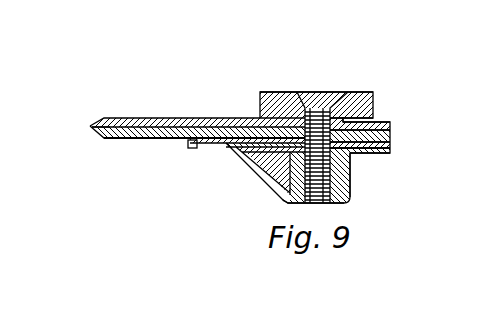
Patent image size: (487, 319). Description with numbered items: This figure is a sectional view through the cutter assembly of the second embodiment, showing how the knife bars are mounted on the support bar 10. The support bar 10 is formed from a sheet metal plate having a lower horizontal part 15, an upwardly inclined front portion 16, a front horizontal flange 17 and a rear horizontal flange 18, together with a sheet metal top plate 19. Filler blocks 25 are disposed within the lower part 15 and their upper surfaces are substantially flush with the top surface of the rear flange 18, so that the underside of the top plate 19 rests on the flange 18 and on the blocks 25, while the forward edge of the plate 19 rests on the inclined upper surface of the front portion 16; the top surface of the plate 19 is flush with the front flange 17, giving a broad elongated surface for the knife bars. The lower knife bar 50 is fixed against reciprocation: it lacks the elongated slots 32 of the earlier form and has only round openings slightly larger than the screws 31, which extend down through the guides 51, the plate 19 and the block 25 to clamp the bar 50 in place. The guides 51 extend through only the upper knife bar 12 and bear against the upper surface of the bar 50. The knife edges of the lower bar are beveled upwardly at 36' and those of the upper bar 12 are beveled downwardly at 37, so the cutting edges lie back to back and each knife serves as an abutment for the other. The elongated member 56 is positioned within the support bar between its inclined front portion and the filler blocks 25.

The support bar 10 is at (355, 164).
The upper knife bar 12 is at (178, 92).
The lower horizontal part 15 is at (355, 205).
The upwardly inclined front portion 16 is at (268, 184).
The front horizontal flange 17 is at (191, 148).
The rear horizontal flange 18 is at (391, 152).
The top plate 19 is at (391, 147).
The filler block 25 is at (351, 183).
The screw 31 is at (317, 104).
The elongated slot 32 is at (380, 118).
The upwardly beveled edge 36' is at (94, 149).
The downwardly beveled edge 37 is at (103, 118).
The lower knife bar 50 is at (143, 140).
The guide 51 is at (362, 93).
The elongated member 56 is at (248, 164).